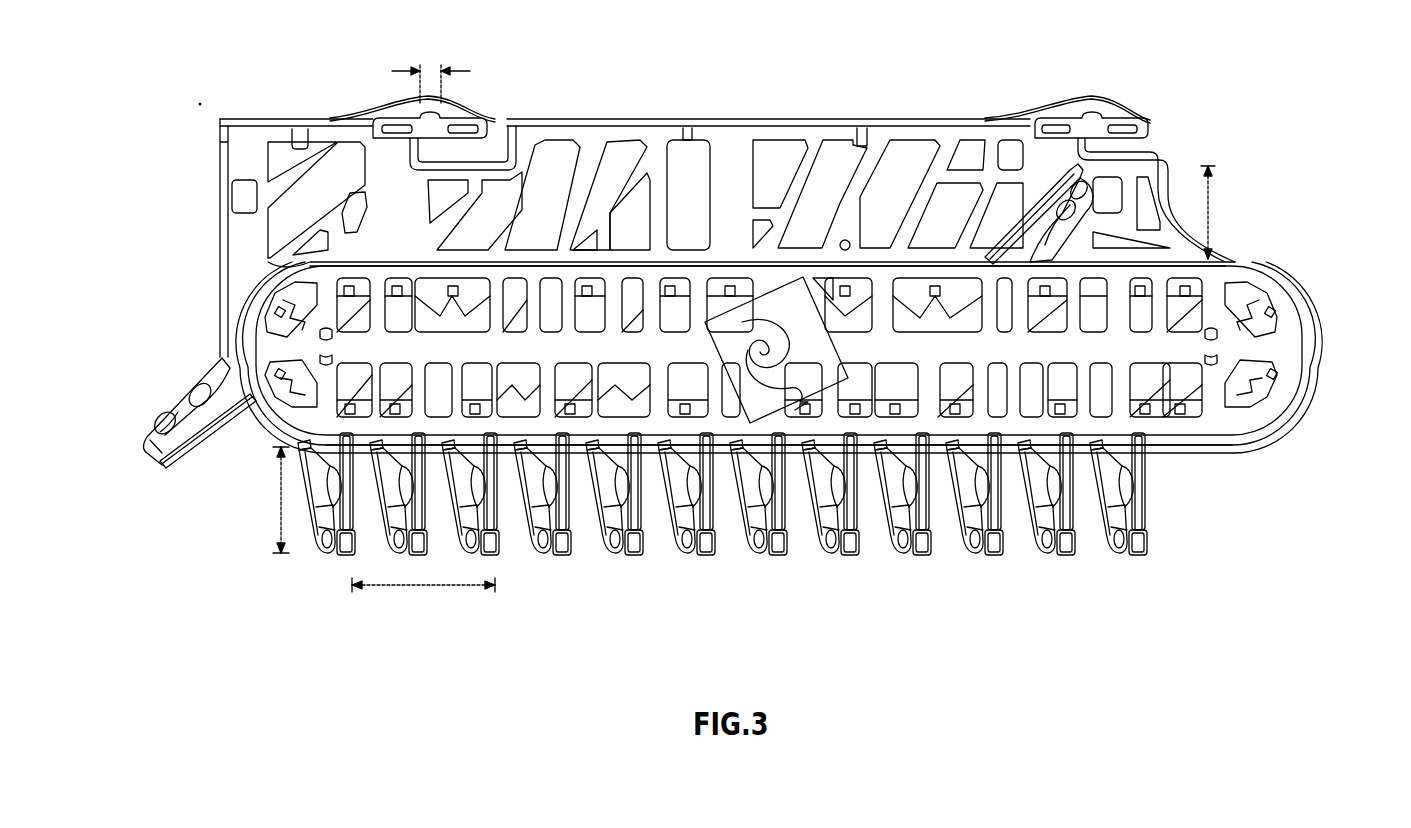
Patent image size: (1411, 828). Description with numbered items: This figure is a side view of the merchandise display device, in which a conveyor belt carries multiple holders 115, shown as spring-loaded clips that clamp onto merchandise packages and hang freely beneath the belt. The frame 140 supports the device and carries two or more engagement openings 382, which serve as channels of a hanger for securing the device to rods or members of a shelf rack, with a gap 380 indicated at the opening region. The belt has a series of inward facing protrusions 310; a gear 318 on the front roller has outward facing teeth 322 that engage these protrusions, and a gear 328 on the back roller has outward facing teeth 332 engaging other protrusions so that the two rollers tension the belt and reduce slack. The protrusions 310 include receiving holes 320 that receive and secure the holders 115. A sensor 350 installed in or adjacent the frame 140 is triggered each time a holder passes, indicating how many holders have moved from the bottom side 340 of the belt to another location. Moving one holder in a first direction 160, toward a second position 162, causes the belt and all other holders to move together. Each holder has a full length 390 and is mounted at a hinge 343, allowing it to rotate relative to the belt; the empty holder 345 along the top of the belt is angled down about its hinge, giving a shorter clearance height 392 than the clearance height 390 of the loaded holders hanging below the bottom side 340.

The holders 115 is at (1144, 546).
The frame 140 is at (930, 125).
The first direction 160 is at (377, 588).
The second contact position 162 is at (478, 588).
The inward facing protrusions 310 is at (1262, 320).
The gear 318 is at (300, 322).
The receiving holes 320 is at (1250, 307).
The outward facing teeth 322 is at (263, 428).
The gear 328 is at (1202, 402).
The outward facing teeth 332 is at (1250, 408).
The bottom side 340 is at (1167, 457).
The hinge 343 is at (853, 290).
The holder 345 is at (1022, 250).
The sensor 350 is at (232, 197).
The clip gap width 380 is at (412, 71).
The engagement openings 382 is at (432, 128).
The full length 390 is at (276, 517).
The clearance height 392 is at (1213, 196).